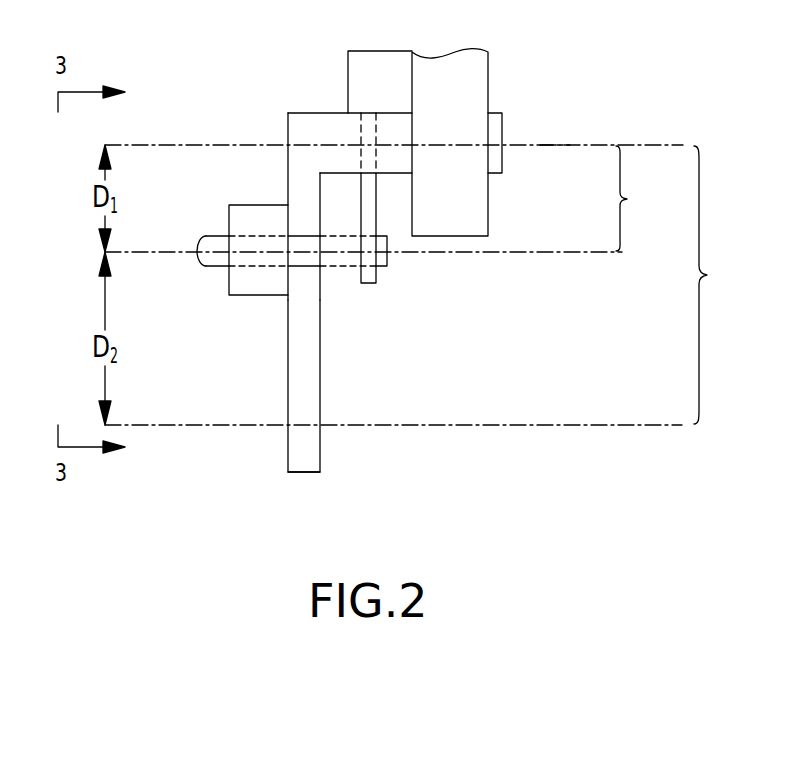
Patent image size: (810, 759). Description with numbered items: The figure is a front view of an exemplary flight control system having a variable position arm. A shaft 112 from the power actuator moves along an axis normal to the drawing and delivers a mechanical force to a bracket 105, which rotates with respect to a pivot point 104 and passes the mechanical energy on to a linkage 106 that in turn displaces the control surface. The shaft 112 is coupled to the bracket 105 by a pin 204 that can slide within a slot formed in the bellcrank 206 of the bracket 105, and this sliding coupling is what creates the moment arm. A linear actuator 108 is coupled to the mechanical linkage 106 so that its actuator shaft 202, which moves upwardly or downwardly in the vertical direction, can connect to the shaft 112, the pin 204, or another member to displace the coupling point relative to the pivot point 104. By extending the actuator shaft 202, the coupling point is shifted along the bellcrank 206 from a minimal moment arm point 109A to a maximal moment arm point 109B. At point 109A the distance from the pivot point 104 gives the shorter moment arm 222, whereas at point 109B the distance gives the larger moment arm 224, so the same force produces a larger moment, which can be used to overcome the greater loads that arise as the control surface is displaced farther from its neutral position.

The pivot point 104 is at (554, 147).
The bracket 105 is at (300, 130).
The linkage 106 is at (478, 85).
The linear actuator 108 is at (357, 75).
The minimal moment arm point 109A is at (303, 252).
The maximal moment arm point 109B is at (304, 425).
The shaft 112 is at (245, 283).
The actuator shaft 202 is at (368, 273).
The pin 204 is at (213, 262).
The bellcrank 206 is at (313, 457).
The moment arm 222 is at (642, 198).
The moment arm 224 is at (720, 285).